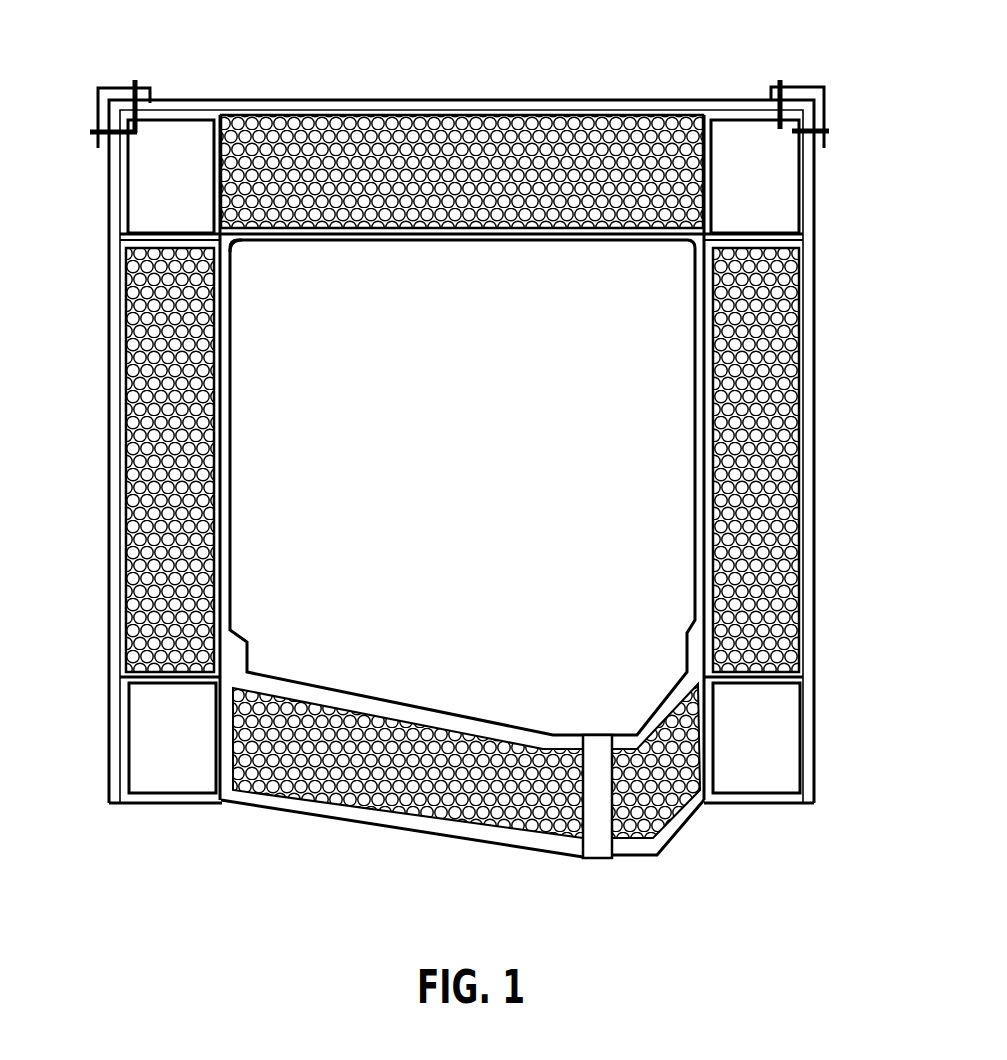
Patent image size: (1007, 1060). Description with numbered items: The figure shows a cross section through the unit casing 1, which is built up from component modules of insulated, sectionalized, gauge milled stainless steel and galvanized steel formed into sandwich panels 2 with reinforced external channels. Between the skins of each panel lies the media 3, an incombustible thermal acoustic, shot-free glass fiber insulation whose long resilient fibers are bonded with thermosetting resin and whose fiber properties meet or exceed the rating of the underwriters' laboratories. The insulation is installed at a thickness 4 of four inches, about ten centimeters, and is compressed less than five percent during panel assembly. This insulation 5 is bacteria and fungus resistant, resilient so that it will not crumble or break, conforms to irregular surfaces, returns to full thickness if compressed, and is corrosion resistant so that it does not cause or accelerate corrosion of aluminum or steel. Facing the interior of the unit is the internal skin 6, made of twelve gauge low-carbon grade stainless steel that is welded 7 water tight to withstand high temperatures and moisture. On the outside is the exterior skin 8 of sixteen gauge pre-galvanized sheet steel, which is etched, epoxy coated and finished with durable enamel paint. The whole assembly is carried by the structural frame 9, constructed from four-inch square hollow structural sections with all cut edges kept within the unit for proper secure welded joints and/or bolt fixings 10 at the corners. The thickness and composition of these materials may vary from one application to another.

The unit casing 1 is at (228, 97).
The sandwich panels 2 is at (620, 107).
The media between the panels 3 is at (128, 468).
The thickness 4 is at (210, 363).
The insulation 5 is at (173, 622).
The internal skin 6 is at (233, 443).
The weld 7 is at (237, 242).
The exterior skin 8 is at (820, 450).
The structural frame 9 is at (177, 741).
The bolt fixings 10 is at (830, 130).